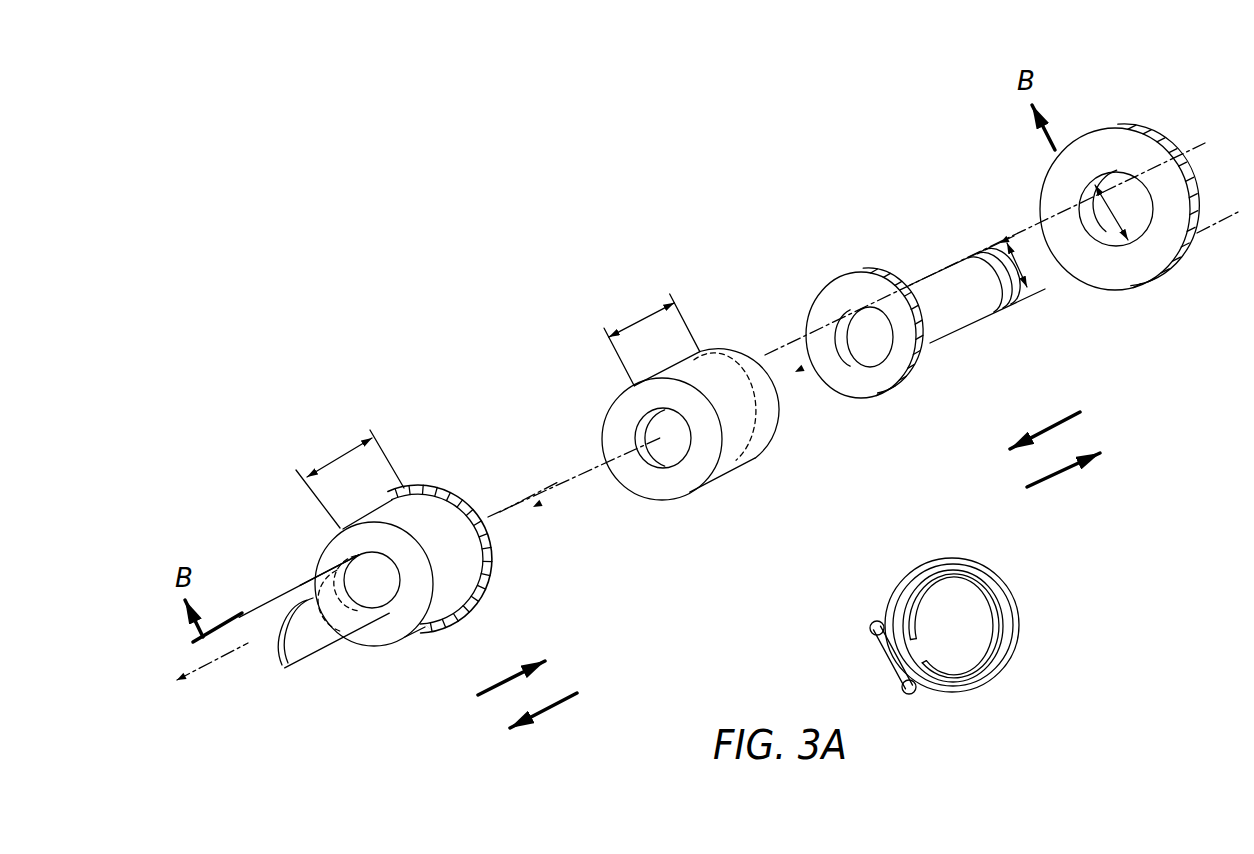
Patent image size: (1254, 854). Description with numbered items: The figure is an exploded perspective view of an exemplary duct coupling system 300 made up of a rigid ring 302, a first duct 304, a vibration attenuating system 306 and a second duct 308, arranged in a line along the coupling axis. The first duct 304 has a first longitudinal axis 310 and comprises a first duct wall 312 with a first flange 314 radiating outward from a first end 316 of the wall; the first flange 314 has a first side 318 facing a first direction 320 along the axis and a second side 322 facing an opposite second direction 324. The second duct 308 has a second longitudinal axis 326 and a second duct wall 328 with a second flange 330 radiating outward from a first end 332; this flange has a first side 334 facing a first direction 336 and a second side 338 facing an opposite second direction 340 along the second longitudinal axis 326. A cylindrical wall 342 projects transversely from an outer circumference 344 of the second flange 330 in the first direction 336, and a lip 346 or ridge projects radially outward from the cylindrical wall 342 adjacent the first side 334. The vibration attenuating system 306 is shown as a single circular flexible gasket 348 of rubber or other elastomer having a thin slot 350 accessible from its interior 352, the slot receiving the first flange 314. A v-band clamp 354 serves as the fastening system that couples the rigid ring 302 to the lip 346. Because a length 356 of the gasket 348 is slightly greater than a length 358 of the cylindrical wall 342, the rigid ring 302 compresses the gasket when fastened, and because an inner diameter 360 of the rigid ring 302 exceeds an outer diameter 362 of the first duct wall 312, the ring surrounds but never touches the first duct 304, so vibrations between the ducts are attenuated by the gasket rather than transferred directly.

The duct coupling system 300 is at (348, 278).
The rigid ring 302 is at (1119, 193).
The first duct 304 is at (944, 303).
The vibration attenuating system 306 is at (701, 434).
The second duct 308 is at (418, 597).
The first longitudinal axis 310 is at (795, 372).
The first duct wall 312 is at (962, 333).
The first flange 314 is at (925, 362).
The first end 316 is at (859, 303).
The first side 318 is at (850, 382).
The first direction 320 is at (1032, 445).
The second side 322 is at (857, 263).
The second direction 324 is at (1062, 472).
The second longitudinal axis 326 is at (535, 505).
The second duct wall 328 is at (317, 653).
The second flange 330 is at (317, 575).
The first end 332 is at (392, 620).
The first side 334 is at (500, 532).
The first direction 336 is at (535, 670).
The second side 338 is at (338, 557).
The second direction 340 is at (542, 717).
The cylindrical wall 342 is at (432, 633).
The outer circumference 344 is at (434, 603).
The lip 346 is at (492, 559).
The circular flexible gasket 348 is at (688, 507).
The thin slot 350 is at (753, 448).
The interior 352 is at (665, 440).
The v-band clamp 354 is at (972, 688).
The length 356 is at (635, 328).
The length 358 is at (330, 470).
The inner diameter 360 is at (1100, 230).
The outer diameter 362 is at (1030, 275).